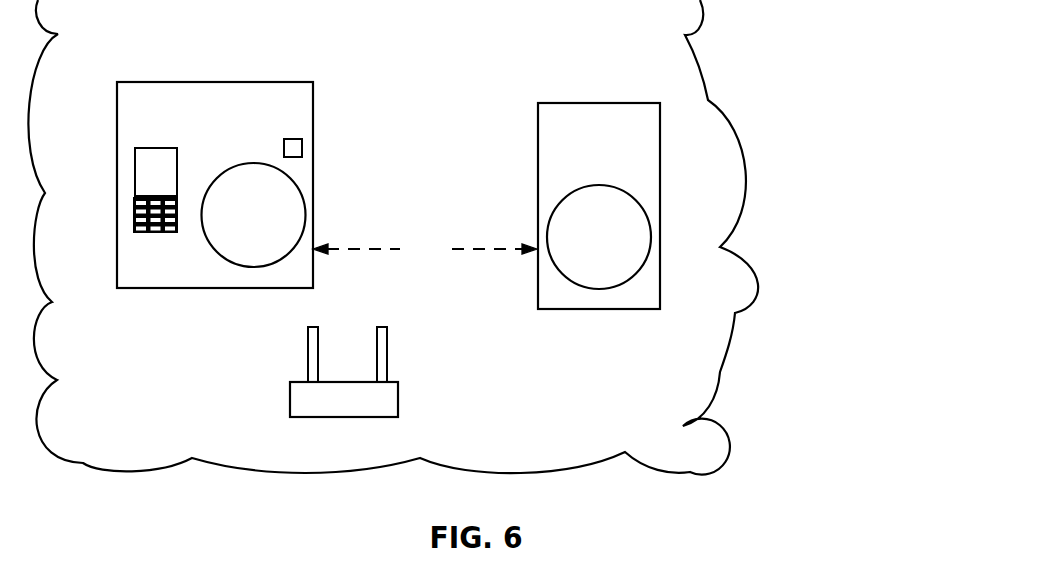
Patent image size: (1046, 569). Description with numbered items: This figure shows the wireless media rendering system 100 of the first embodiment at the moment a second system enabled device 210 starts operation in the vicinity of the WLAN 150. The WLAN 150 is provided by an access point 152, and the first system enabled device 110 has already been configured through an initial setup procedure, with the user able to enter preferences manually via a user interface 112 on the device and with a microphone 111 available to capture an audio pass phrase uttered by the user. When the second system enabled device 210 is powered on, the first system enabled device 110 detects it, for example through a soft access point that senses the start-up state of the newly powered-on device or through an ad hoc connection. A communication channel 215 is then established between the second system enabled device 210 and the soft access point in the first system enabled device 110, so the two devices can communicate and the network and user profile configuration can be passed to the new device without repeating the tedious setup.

The wireless media rendering system 100 is at (822, 431).
The first system enabled device 110 is at (197, 112).
The microphone 111 is at (303, 148).
The user interface 112 is at (150, 233).
The WLAN 150 is at (132, 456).
The access point 152 is at (327, 412).
The second system enabled device 210 is at (582, 134).
The communication channel 215 is at (425, 250).